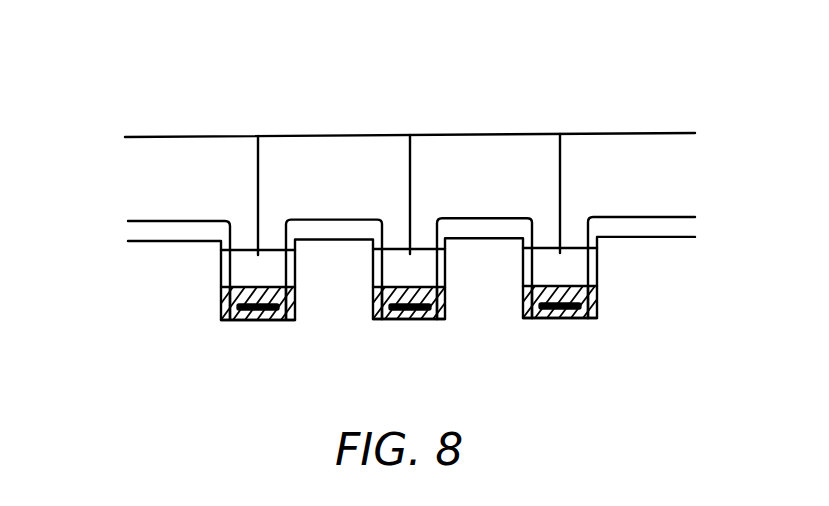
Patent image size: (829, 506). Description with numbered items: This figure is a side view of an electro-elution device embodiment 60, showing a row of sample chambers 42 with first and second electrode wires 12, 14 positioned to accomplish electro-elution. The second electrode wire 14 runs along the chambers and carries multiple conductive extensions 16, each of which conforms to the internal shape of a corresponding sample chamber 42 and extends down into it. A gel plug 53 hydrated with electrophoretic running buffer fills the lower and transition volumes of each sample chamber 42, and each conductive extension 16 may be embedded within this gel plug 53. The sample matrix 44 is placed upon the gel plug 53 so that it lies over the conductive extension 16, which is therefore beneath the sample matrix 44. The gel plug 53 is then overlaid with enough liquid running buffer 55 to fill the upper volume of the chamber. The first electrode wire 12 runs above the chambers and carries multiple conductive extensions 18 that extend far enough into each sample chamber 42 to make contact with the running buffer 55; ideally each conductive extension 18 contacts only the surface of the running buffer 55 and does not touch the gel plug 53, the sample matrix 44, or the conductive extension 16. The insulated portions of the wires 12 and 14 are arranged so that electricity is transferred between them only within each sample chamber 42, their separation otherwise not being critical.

The electro-elution device embodiment 60 is at (571, 76).
The first electrode wire 12 is at (152, 136).
The second electrode wire 14 is at (135, 220).
The conductive extensions 18 is at (259, 160).
The running buffer 55 is at (244, 259).
The conductive extensions 16 is at (296, 259).
The gel plug 53 is at (222, 291).
The sample matrix 44 is at (260, 322).
The sample chamber 42 is at (246, 322).